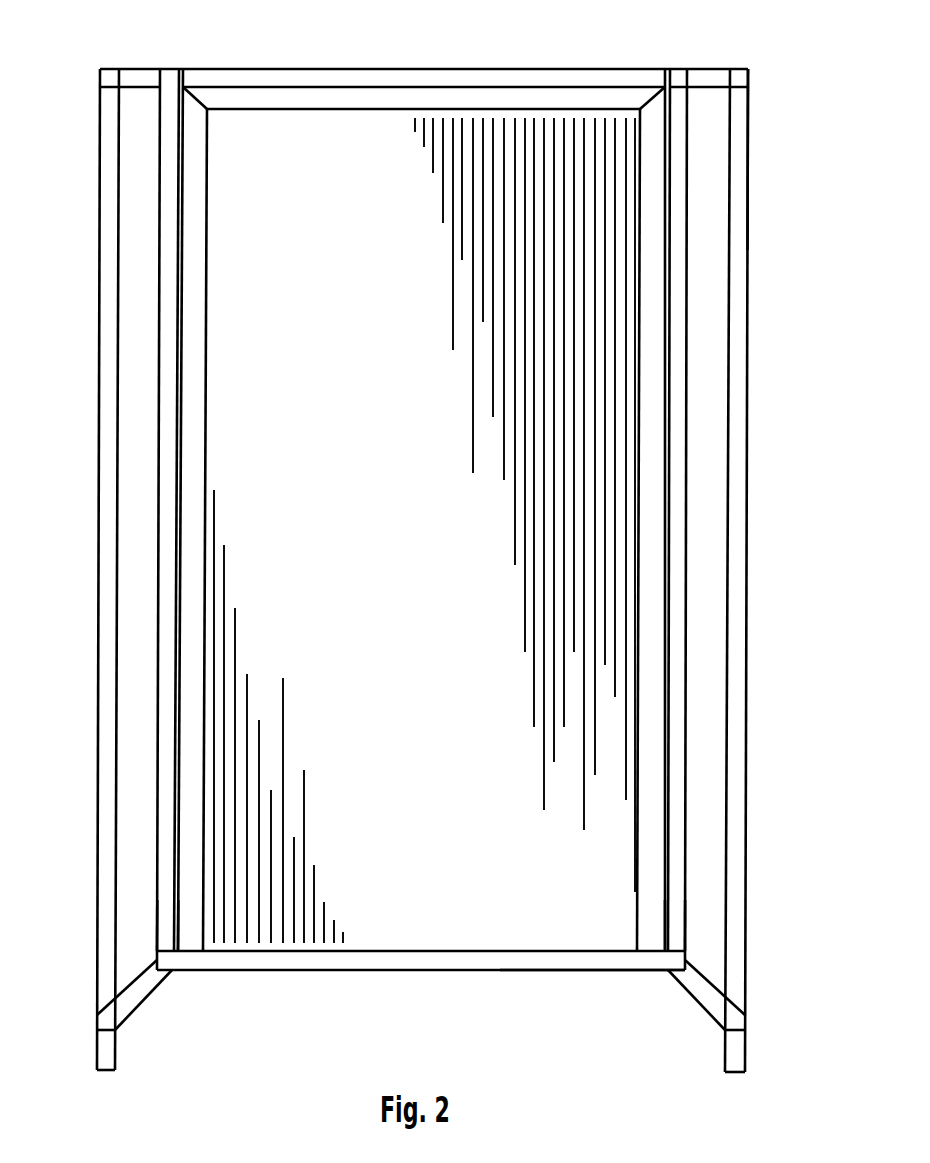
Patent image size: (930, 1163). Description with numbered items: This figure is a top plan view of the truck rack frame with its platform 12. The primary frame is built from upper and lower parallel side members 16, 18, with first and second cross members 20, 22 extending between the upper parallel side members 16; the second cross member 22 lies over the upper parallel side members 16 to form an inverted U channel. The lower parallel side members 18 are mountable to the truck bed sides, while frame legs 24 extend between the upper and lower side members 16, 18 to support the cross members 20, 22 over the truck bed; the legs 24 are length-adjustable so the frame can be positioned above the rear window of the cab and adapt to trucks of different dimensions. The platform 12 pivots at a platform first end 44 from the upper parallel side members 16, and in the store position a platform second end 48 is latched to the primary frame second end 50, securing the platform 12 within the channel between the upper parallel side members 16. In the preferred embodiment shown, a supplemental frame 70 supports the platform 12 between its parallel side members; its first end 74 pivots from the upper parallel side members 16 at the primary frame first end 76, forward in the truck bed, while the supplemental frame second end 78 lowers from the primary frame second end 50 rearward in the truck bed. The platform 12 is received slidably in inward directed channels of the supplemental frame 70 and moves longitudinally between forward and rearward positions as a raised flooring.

The platform 12 is at (415, 120).
The upper parallel side members 16 is at (163, 585).
The lower parallel side members 18 is at (107, 462).
The first cross member 20 is at (307, 72).
The second cross member 22 is at (283, 963).
The frame legs 24 is at (140, 68).
The platform first end 44 is at (745, 112).
The platform second end 48 is at (468, 965).
The primary frame second end 50 is at (162, 917).
The supplemental frame 70 is at (235, 100).
The first end 74 is at (500, 95).
The primary frame first end 76 is at (602, 77).
The supplemental frame second end 78 is at (538, 962).